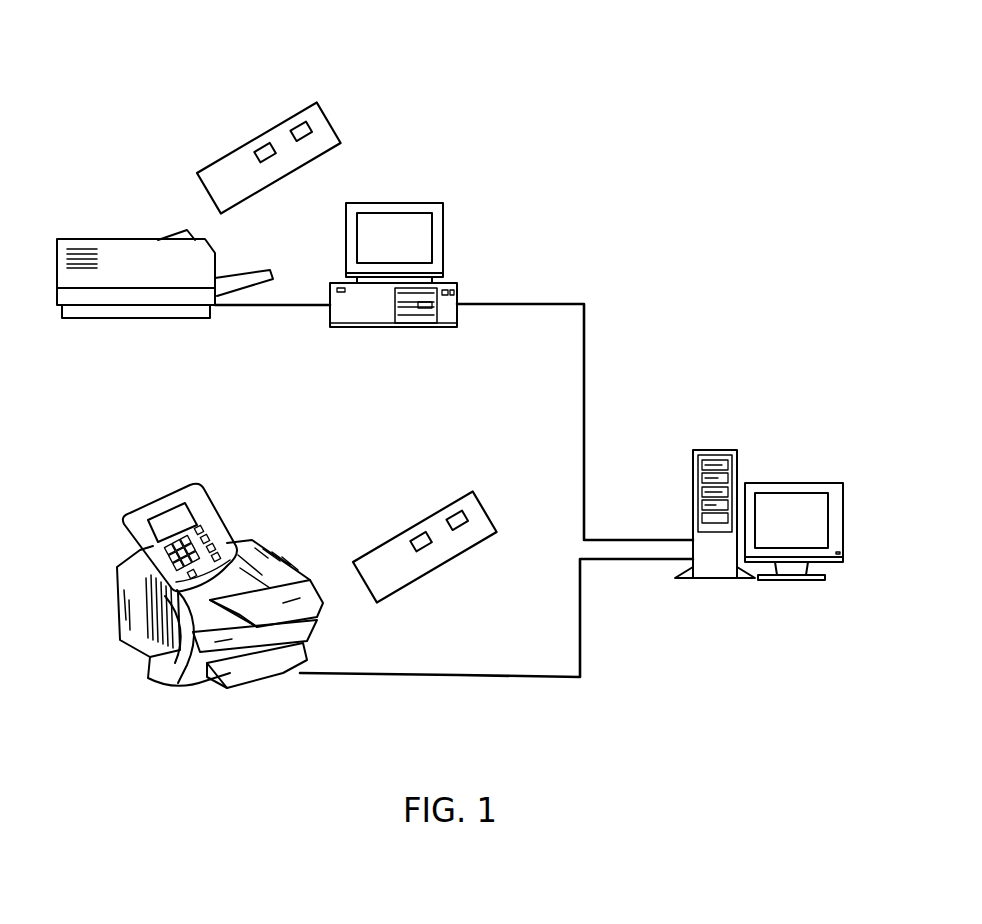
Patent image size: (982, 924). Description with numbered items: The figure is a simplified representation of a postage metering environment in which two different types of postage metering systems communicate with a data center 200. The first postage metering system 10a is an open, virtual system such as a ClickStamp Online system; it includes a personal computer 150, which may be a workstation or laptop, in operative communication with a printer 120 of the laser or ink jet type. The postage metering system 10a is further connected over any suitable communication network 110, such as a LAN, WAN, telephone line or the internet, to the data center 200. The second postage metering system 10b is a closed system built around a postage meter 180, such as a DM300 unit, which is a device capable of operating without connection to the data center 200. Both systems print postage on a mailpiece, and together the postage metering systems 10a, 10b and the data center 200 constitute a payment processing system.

The postage metering system 10a is at (242, 71).
The postage metering system 10b is at (137, 697).
The communication network 110 is at (585, 358).
The printer 120 is at (115, 238).
The personal computer 150 is at (392, 202).
The postage meter 180 is at (118, 613).
The data center 200 is at (787, 483).